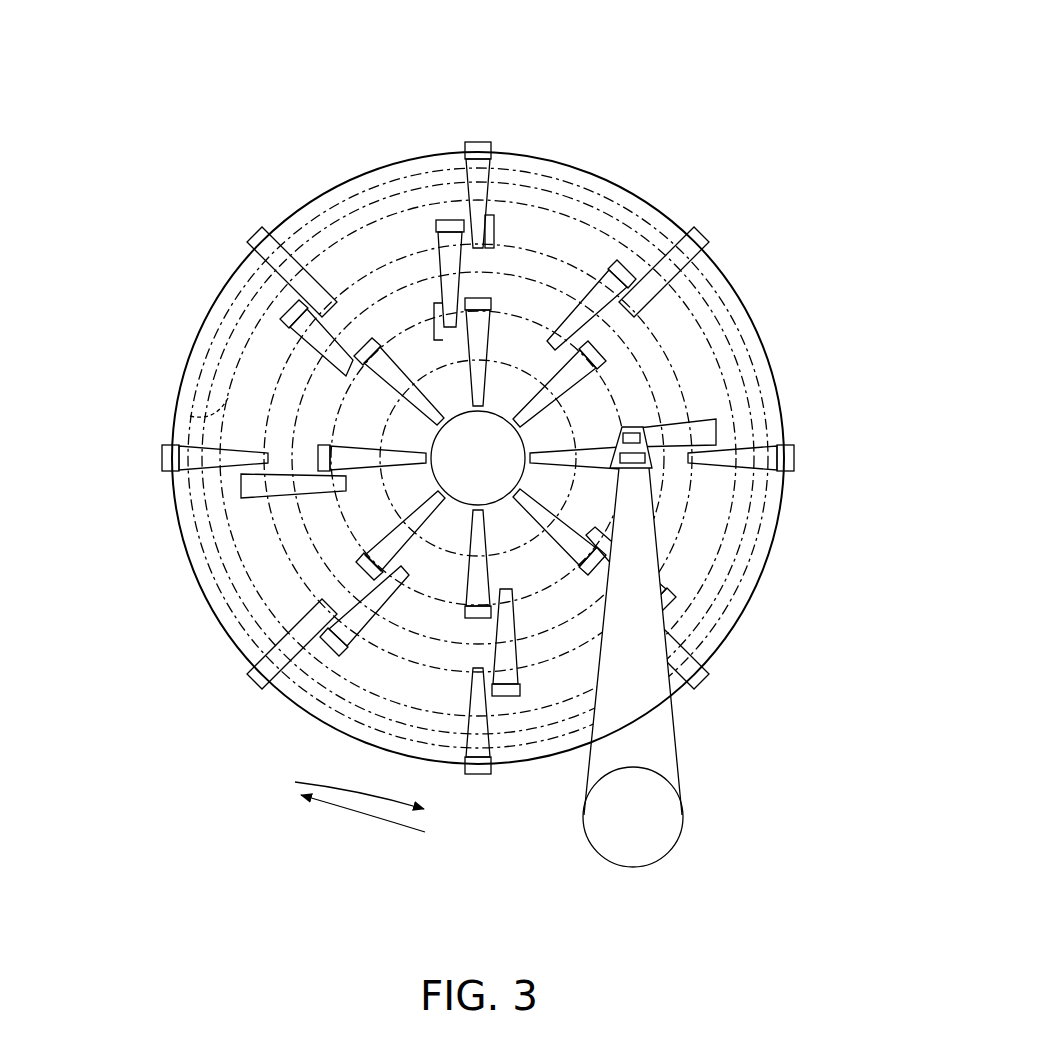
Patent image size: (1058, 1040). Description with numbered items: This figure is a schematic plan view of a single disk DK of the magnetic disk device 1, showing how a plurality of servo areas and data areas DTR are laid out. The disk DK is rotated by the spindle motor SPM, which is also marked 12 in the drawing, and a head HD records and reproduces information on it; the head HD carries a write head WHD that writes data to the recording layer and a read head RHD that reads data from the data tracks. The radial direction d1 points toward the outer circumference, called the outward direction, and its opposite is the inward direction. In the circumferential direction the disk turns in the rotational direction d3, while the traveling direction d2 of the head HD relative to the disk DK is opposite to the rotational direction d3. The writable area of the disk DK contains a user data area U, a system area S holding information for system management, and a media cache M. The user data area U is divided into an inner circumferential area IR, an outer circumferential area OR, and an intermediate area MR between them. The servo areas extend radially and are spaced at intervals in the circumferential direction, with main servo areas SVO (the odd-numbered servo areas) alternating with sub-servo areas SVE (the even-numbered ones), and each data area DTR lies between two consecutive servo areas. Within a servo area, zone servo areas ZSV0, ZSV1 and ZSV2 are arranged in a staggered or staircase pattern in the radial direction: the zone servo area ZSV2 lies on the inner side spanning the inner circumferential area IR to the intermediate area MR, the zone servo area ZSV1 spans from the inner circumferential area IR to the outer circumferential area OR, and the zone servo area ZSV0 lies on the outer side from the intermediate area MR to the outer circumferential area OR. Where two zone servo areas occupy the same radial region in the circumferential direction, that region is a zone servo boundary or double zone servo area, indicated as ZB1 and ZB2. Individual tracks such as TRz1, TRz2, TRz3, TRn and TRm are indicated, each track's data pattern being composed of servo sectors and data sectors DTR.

The magnetic disk device 1 is at (840, 72).
The spindle motor 12 is at (463, 488).
The spindle motor SPM is at (476, 485).
The disk DK is at (786, 392).
The data area DTR is at (561, 184).
The main servo area SVO is at (478, 140).
The sub-servo area SVE is at (257, 233).
The inner circumferential area IR is at (438, 372).
The intermediate area MR is at (362, 278).
The outer circumferential area OR is at (342, 240).
The zone boundary 1 ZB1 is at (495, 233).
The zone boundary 2 ZB2 is at (445, 218).
The zone servo area ZSV0 is at (436, 227).
The zone servo area ZSV1 is at (445, 340).
The zone servo area ZSV2 is at (557, 334).
The track zone 1 TRz1 is at (380, 500).
The track zone 2 TRz2 is at (375, 697).
The track zone 3 TRz3 is at (282, 623).
The track n TRn is at (535, 600).
The track m TRm is at (550, 668).
The head HD is at (620, 434).
The write head WHD is at (645, 431).
The read head RHD is at (648, 468).
The user data area U is at (198, 514).
The media cache M is at (192, 544).
The system area S is at (196, 580).
The radial direction d1 is at (247, 413).
The traveling direction d2 is at (320, 808).
The rotational direction d3 is at (372, 800).